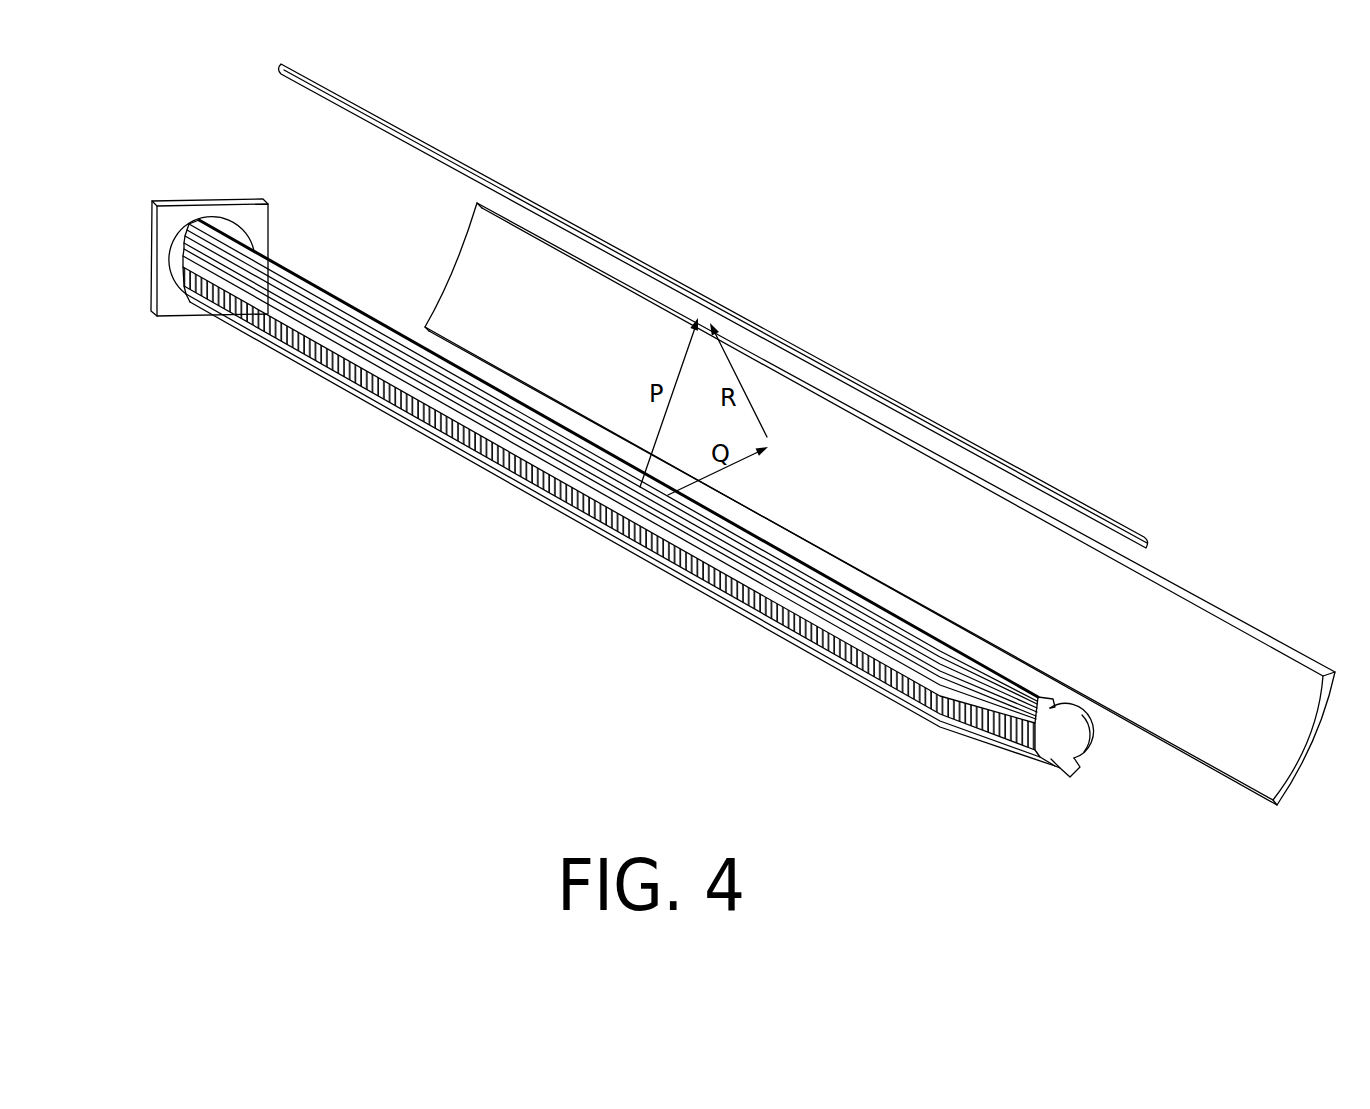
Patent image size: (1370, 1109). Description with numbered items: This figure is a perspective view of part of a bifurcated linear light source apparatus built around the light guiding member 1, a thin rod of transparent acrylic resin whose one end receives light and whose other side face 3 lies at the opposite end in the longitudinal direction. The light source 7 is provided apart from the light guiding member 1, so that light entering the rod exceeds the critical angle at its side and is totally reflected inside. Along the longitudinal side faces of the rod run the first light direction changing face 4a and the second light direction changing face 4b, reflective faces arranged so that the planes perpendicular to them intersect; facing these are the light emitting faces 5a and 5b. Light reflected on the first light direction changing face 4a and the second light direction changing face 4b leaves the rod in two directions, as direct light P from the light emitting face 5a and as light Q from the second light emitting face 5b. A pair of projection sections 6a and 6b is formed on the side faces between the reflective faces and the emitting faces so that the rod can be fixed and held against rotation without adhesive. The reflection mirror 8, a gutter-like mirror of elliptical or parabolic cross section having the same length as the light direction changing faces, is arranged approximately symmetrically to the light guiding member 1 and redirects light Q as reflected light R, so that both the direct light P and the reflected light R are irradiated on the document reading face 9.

The light guiding member 1 is at (860, 742).
The other side face 3 is at (1068, 737).
The first light direction changing face 4a is at (750, 614).
The second light direction changing face 4b is at (672, 570).
The light emitting face 5a is at (1050, 702).
The second light emitting face 5b is at (1089, 737).
The projection section 6a is at (975, 668).
The projection section 6b is at (1060, 777).
The light source 7 is at (212, 200).
The reflection mirror 8 is at (1172, 582).
The document reading face 9 is at (372, 113).